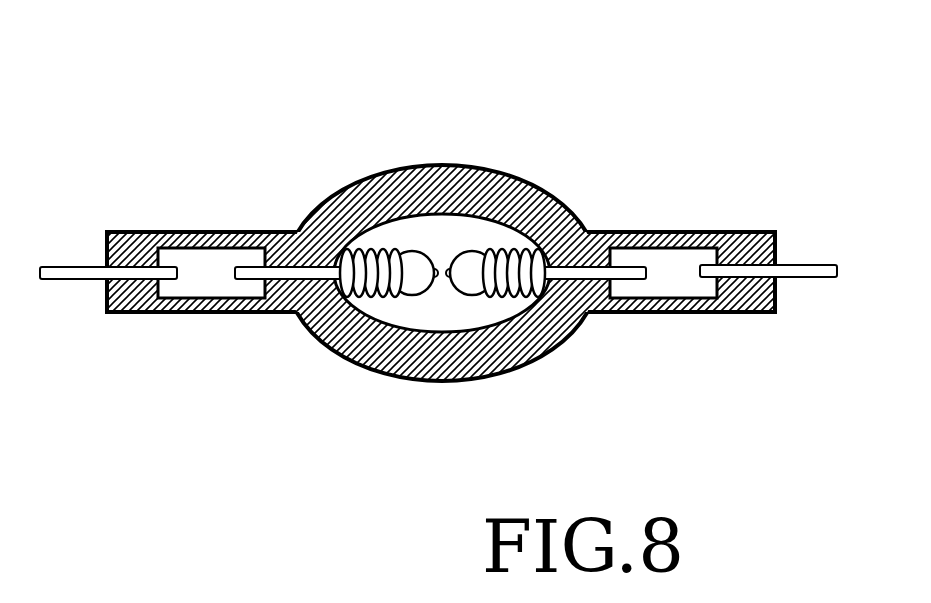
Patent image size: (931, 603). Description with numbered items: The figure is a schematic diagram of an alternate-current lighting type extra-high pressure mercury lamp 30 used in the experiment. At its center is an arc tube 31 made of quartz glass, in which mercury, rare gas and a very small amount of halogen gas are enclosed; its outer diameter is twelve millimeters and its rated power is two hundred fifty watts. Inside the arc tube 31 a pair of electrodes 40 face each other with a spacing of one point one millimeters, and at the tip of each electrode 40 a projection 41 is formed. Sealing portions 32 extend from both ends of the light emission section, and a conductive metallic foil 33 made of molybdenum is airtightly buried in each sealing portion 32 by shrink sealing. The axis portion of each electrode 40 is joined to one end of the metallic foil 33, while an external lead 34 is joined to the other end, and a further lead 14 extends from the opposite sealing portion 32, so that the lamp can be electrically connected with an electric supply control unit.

The extra-high pressure mercury lamp 30 is at (545, 166).
The arc tube 31 is at (450, 388).
The sealing portion 32 is at (208, 325).
The conductive metallic foil 33 is at (195, 260).
The external lead 34 is at (70, 262).
The lead wire 14 is at (798, 260).
The electrode 40 is at (377, 243).
The projection 41 is at (434, 277).